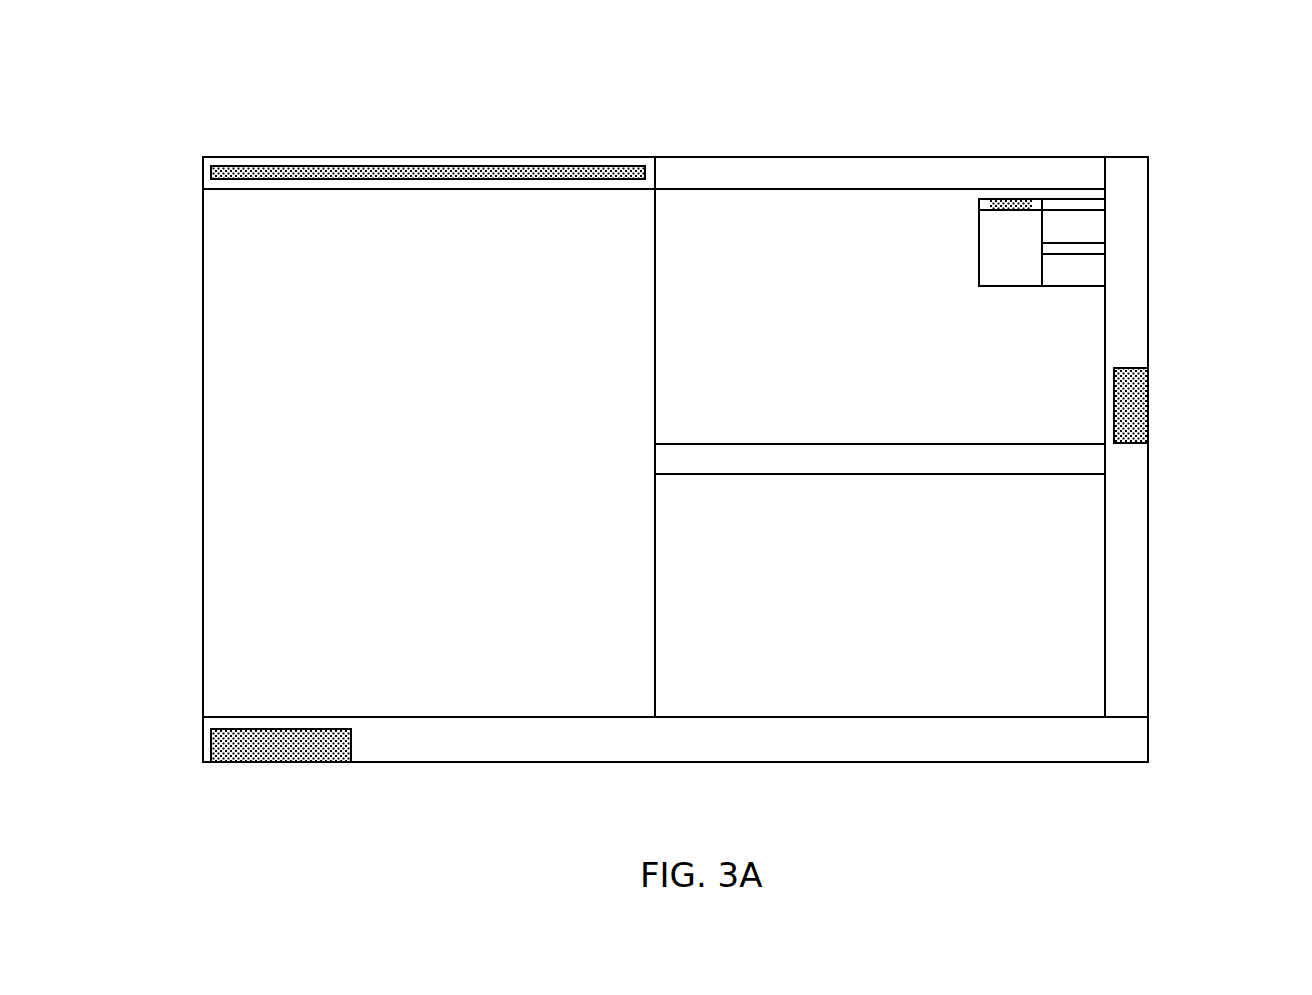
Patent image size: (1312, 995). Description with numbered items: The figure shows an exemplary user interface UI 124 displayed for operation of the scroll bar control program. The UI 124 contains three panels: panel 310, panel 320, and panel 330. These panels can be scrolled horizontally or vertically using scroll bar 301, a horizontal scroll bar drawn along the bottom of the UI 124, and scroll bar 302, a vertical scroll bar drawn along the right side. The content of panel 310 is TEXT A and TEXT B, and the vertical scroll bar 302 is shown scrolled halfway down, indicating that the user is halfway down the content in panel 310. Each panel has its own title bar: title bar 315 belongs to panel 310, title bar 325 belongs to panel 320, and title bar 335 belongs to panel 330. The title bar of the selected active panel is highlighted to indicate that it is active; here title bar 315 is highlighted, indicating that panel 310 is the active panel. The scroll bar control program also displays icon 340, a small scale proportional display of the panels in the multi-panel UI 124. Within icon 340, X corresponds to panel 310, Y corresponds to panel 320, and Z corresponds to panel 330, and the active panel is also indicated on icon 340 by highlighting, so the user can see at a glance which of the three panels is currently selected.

The UI 124 is at (1184, 93).
The scroll bar 301 is at (231, 768).
The scroll bar 302 is at (1137, 338).
The panel 310 is at (253, 457).
The title bar 315 is at (408, 170).
The panel 320 is at (1063, 318).
The title bar 325 is at (874, 173).
The panel 330 is at (875, 686).
The title bar 335 is at (1073, 462).
The icon 340 is at (1060, 198).